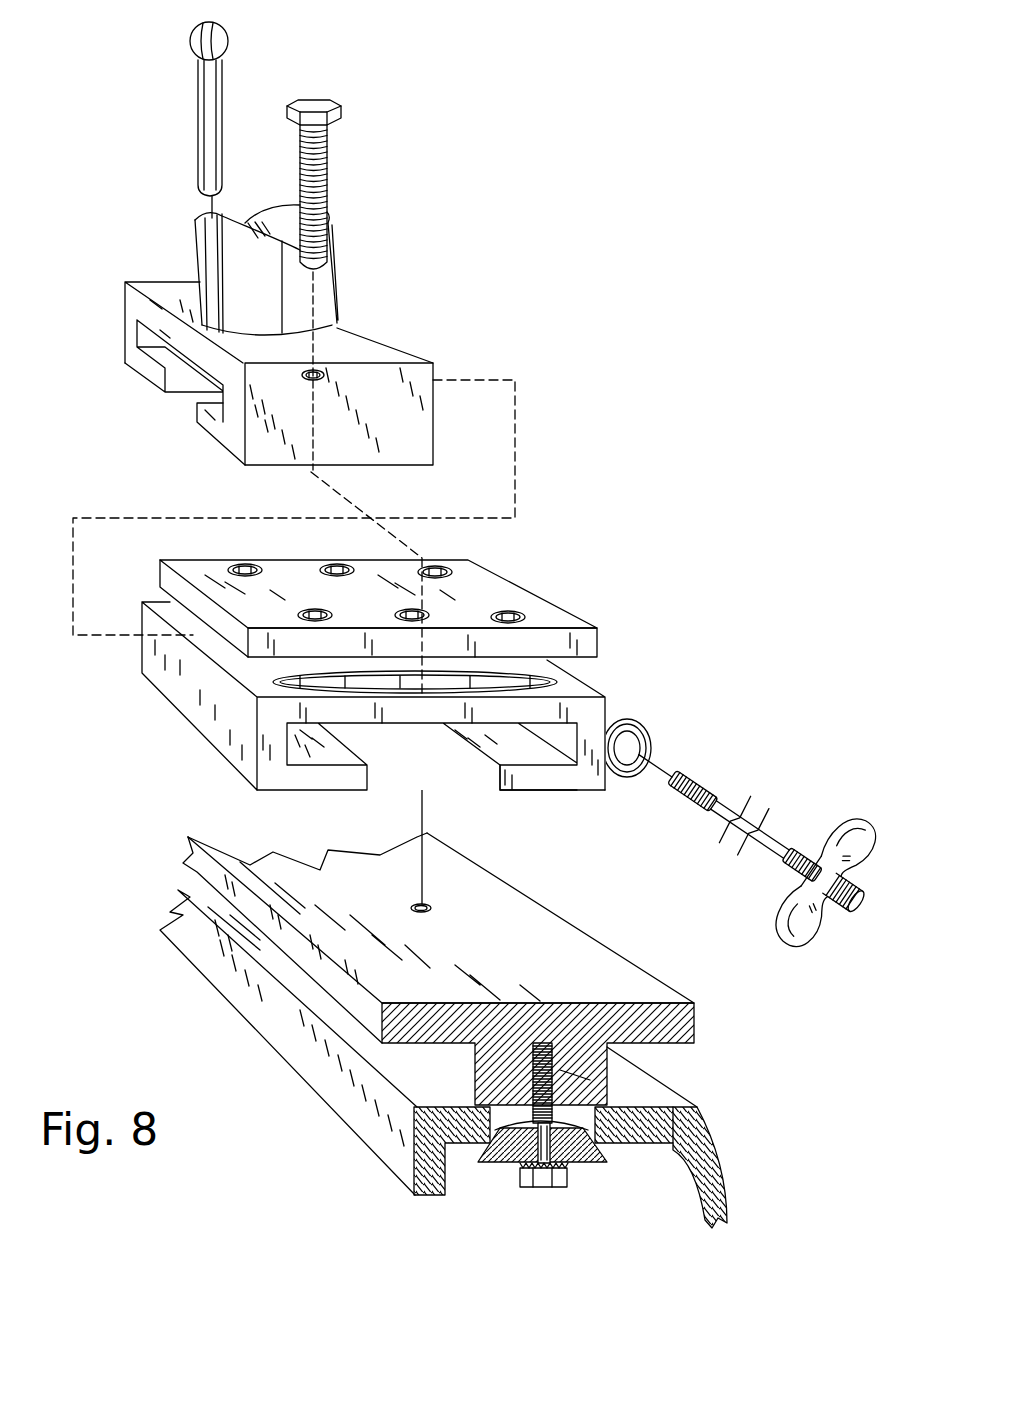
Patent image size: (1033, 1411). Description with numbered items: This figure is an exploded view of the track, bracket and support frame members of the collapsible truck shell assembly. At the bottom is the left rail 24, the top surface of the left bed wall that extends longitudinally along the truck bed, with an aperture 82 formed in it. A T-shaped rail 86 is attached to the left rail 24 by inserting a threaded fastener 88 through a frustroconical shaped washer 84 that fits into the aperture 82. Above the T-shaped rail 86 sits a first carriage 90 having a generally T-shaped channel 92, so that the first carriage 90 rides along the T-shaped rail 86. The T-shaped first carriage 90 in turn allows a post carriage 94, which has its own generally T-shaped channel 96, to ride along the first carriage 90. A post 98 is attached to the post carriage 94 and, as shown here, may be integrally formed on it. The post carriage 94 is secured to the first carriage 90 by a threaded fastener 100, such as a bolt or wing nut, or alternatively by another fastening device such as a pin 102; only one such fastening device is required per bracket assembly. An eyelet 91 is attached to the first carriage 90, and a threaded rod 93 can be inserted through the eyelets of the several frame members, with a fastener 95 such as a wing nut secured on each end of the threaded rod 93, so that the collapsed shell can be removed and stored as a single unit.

The left rail 24 is at (373, 1155).
The aperture 82 is at (590, 1112).
The frustroconical shaped washer 84 is at (497, 1162).
The T-shaped rail 86 is at (694, 1012).
The threaded fastener 88 is at (557, 1182).
The first carriage 90 is at (600, 700).
The eyelet 91 is at (652, 737).
The T-shaped channel 92 is at (548, 743).
The threaded rod 93 is at (770, 840).
The post carriage 94 is at (421, 382).
The fastener 95 is at (797, 938).
The T-shaped channel 96 is at (222, 405).
The post 98 is at (333, 278).
The threaded fastener 100 is at (327, 173).
The pin 102 is at (222, 85).